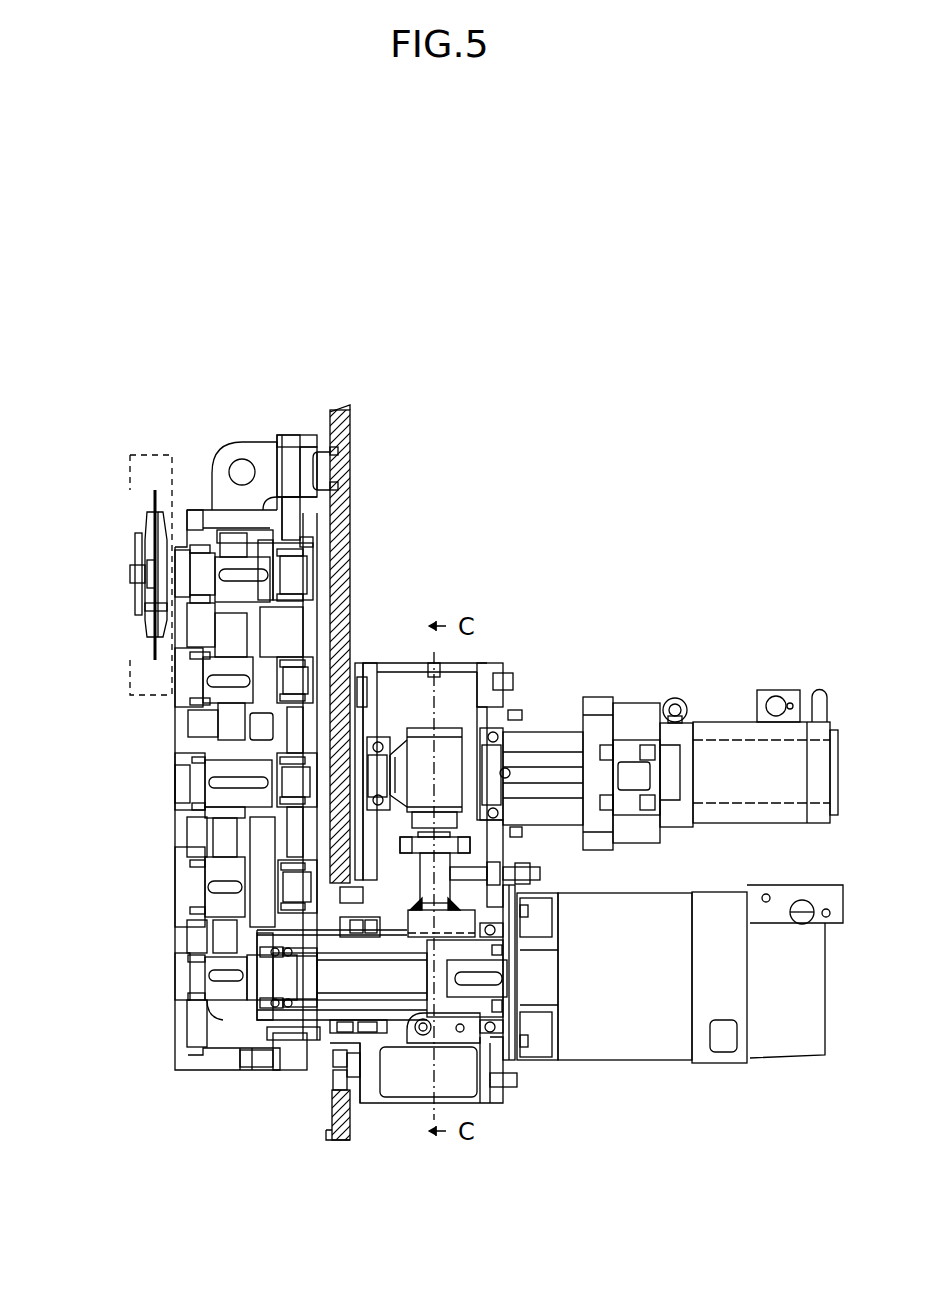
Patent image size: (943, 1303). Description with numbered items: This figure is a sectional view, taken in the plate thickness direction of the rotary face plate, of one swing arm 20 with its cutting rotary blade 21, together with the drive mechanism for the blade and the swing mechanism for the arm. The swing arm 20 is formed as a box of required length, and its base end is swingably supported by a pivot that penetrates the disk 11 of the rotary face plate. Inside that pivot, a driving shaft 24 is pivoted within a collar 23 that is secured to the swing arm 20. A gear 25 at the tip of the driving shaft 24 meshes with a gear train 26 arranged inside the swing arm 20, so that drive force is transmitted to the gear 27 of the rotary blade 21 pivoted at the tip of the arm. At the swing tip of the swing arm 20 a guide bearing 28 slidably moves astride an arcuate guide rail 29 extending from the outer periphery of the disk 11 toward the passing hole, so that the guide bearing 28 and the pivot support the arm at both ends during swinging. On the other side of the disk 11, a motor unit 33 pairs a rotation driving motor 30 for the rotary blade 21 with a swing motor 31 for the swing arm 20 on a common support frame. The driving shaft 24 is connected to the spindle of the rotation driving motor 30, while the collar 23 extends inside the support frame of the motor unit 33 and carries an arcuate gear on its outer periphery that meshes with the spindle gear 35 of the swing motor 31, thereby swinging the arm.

The disk 11 is at (347, 530).
The swing arm 20 is at (165, 758).
The cutting rotary blade 21 is at (148, 502).
The collar 23 is at (307, 1017).
The driving shaft 24 is at (347, 983).
The gear 25 is at (235, 1005).
The gear train 26 is at (215, 792).
The gear 27 is at (233, 547).
The guide bearing 28 is at (288, 470).
The arcuate guide rail 29 is at (310, 467).
The rotation driving motor 30 is at (636, 1050).
The swing motor 31 is at (727, 722).
The motor unit 33 is at (392, 666).
The spindle gear 35 is at (447, 707).